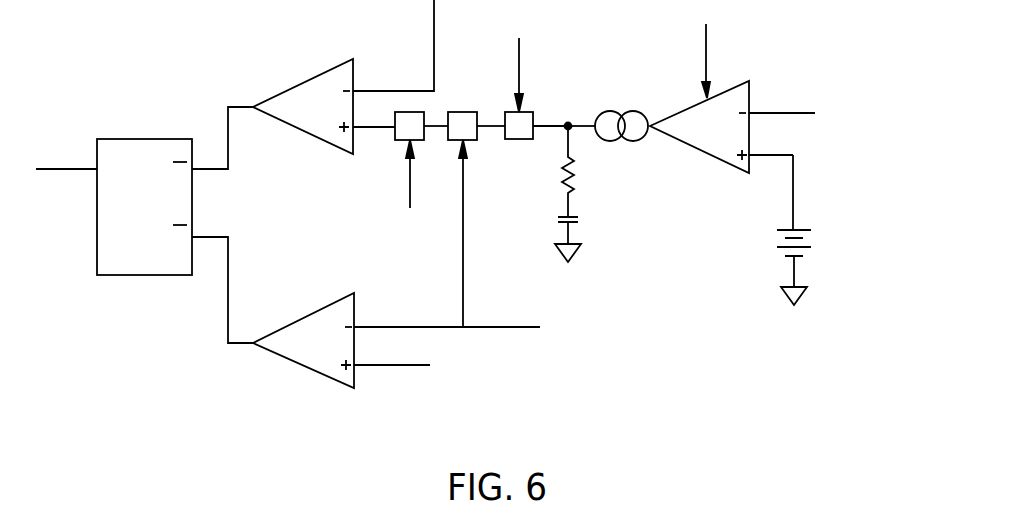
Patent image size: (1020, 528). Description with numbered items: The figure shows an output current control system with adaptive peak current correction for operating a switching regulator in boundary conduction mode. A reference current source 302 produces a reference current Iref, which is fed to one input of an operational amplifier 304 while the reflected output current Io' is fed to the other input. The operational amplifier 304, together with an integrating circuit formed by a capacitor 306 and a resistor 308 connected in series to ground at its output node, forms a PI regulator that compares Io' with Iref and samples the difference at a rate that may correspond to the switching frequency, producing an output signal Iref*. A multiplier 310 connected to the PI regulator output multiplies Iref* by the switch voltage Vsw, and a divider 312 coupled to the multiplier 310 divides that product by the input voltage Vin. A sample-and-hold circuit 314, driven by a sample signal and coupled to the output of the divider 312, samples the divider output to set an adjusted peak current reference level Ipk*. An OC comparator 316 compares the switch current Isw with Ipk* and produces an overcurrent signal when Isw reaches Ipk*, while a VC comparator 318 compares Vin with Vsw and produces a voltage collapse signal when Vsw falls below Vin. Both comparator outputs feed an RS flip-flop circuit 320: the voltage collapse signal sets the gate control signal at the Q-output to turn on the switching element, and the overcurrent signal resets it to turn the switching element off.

The reference current source 302 is at (832, 247).
The operational amplifier 304 is at (696, 150).
The capacitor 306 is at (597, 220).
The resistor 308 is at (592, 173).
The multiplier 310 is at (514, 140).
The divider 312 is at (461, 112).
The sample-and-hold circuit 314 is at (405, 112).
The OC comparator 316 is at (289, 125).
The VC comparator 318 is at (300, 362).
The RS flip-flop circuit 320 is at (97, 232).